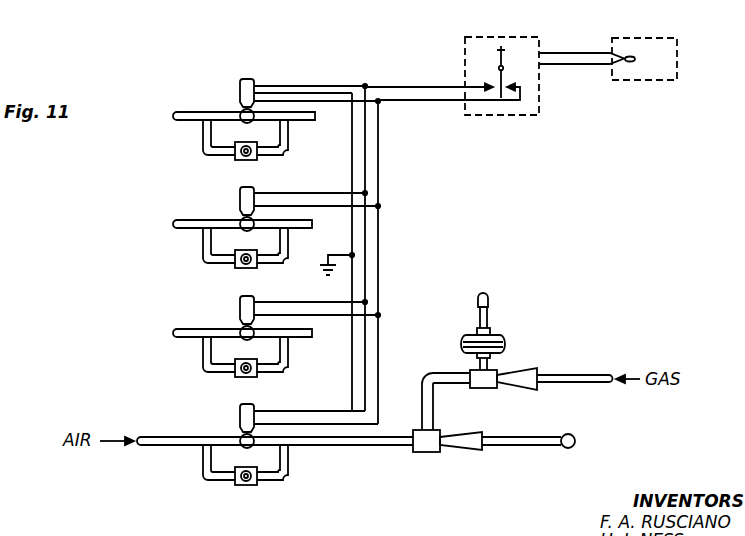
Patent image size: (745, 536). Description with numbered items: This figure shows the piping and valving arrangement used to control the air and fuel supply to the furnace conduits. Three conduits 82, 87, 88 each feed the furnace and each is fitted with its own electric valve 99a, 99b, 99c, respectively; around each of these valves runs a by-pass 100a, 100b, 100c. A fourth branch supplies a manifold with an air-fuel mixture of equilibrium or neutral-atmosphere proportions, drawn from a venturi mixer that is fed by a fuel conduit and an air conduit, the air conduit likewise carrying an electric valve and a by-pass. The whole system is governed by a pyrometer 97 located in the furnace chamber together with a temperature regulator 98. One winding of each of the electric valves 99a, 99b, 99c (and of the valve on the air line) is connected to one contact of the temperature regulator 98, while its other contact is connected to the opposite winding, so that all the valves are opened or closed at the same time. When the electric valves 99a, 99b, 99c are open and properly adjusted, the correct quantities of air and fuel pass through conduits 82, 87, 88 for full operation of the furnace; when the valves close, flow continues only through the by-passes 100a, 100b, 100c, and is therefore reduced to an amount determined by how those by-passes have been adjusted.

The conduit 82 is at (187, 112).
The conduit 87 is at (185, 219).
The conduit 88 is at (185, 329).
The electric valve 99a is at (248, 90).
The electric valve 99b is at (248, 190).
The electric valve 99c is at (246, 298).
The by-pass 100a is at (233, 158).
The by-pass 100b is at (233, 267).
The by-pass 100c is at (233, 374).
The temperature regulator 98 is at (528, 37).
The pyrometer 97 is at (633, 57).